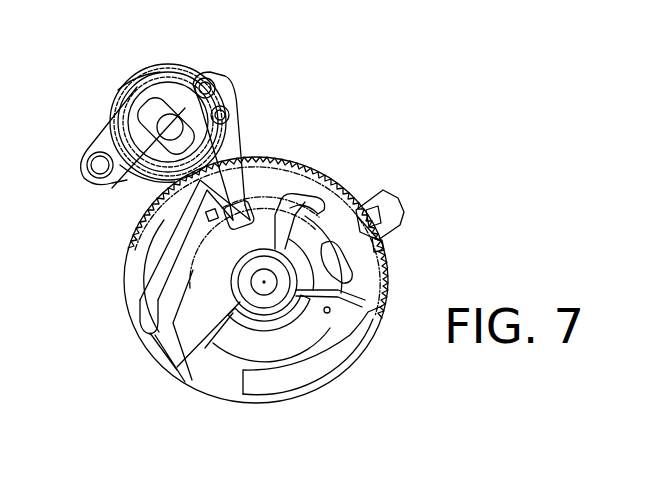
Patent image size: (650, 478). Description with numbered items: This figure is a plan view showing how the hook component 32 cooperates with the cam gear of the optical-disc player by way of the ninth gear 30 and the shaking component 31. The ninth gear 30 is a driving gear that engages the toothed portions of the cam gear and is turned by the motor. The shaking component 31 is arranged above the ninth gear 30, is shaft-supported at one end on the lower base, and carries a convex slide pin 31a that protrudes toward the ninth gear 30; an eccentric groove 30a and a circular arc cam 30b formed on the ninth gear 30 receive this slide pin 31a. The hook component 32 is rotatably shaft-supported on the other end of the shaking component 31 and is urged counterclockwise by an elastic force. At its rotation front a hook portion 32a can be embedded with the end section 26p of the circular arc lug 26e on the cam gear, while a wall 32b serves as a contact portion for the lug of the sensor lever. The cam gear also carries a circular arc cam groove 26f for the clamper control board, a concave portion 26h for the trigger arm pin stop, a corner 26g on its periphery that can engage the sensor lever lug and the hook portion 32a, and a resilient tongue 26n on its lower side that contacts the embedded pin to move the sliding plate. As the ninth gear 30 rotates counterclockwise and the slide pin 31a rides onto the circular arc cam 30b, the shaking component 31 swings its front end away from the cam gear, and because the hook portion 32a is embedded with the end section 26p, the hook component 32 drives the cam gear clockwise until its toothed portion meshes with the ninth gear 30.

The circular arc lug 26e is at (333, 190).
The circular arc cam groove 26f is at (142, 266).
The corner 26g is at (393, 190).
The concave portion 26h is at (172, 343).
The resilient tongue 26n is at (335, 258).
The end section 26p is at (238, 242).
The ninth gear 30 is at (170, 63).
The eccentric groove 30a is at (145, 158).
The circular arc cam 30b is at (147, 77).
The shaking component 31 is at (83, 125).
The slide pin 31a is at (120, 88).
The hook component 32 is at (304, 90).
The hook portion 32a is at (248, 207).
The wall 32b is at (238, 215).